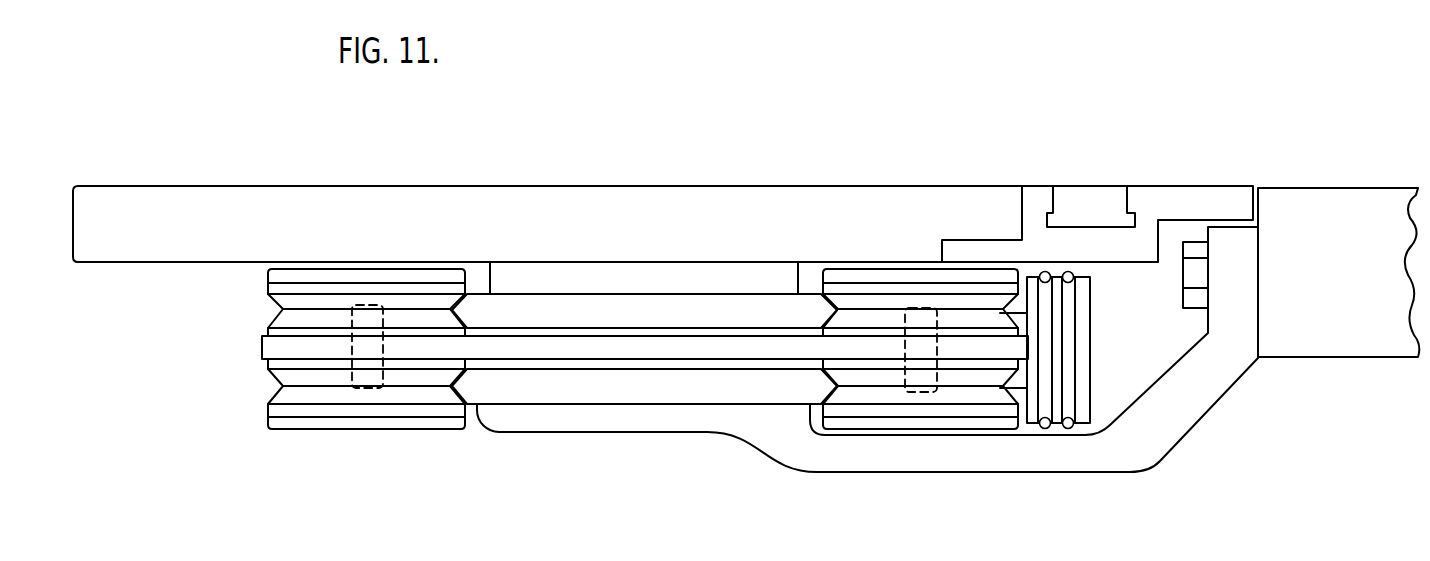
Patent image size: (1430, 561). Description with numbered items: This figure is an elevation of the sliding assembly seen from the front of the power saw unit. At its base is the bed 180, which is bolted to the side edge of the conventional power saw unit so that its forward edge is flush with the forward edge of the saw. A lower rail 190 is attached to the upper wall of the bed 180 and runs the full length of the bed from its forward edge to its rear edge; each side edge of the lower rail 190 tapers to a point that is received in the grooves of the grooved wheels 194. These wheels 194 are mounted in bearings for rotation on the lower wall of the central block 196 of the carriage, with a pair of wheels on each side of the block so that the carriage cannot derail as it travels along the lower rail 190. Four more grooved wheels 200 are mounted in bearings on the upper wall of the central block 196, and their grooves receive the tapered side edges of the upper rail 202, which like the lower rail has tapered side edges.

The upper rail 202 is at (607, 290).
The grooved wheels 200 is at (272, 311).
The grooved wheels 194 is at (273, 388).
The central block 196 is at (585, 371).
The lower rail 190 is at (525, 407).
The bed 180 is at (721, 409).